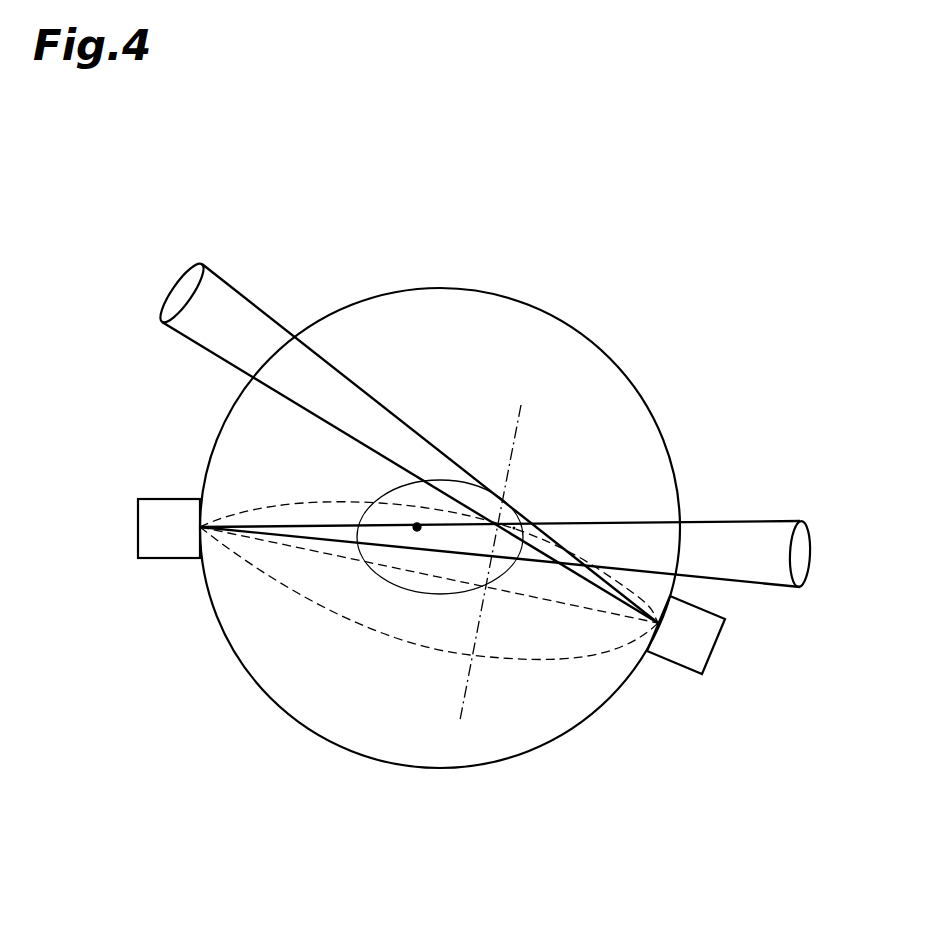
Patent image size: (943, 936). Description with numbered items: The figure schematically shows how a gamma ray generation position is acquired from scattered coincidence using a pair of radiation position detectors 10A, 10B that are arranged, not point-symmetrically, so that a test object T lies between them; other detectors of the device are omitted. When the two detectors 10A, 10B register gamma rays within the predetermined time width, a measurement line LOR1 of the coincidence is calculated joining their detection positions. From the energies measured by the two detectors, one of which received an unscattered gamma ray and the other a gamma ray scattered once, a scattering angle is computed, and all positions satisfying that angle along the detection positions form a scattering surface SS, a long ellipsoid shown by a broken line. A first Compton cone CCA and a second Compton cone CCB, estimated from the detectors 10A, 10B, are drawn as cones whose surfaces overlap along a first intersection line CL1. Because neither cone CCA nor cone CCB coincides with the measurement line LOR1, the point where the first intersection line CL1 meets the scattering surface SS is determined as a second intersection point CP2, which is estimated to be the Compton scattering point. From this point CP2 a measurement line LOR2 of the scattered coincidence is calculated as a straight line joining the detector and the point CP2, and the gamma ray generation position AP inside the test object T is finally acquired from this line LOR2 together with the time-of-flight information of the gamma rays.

The second Compton cone CCB is at (248, 300).
The first Compton cone CCA is at (738, 521).
The first intersection line CL1 is at (578, 565).
The test object T is at (383, 497).
The measurement line of scattered coincidence LOR2 is at (288, 524).
The measurement line of coincidence LOR1 is at (577, 610).
The scattering surface SS is at (537, 660).
The gamma ray generation position AP is at (417, 527).
The second intersection point CP2 is at (512, 528).
The radiation position detector 10A is at (137, 528).
The radiation position detector 10B is at (718, 648).